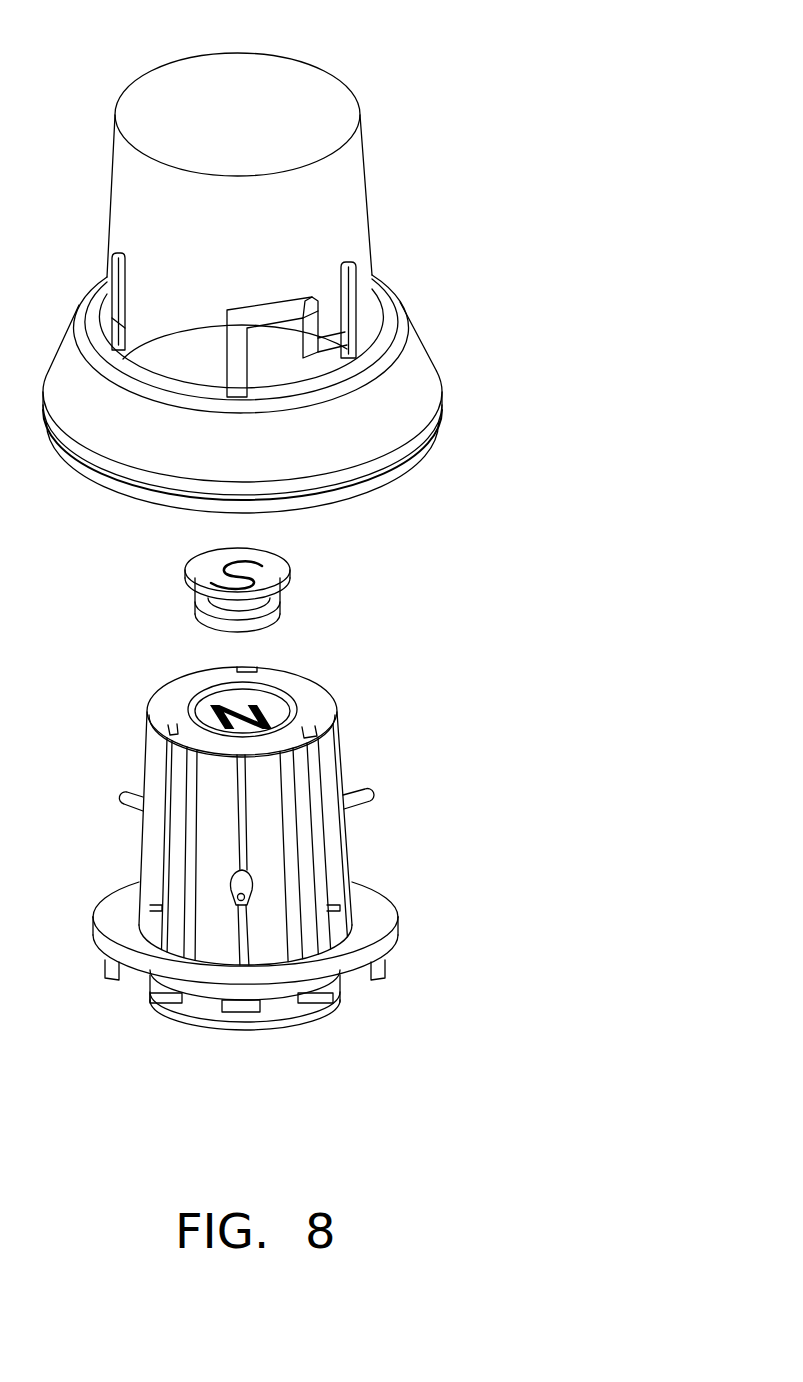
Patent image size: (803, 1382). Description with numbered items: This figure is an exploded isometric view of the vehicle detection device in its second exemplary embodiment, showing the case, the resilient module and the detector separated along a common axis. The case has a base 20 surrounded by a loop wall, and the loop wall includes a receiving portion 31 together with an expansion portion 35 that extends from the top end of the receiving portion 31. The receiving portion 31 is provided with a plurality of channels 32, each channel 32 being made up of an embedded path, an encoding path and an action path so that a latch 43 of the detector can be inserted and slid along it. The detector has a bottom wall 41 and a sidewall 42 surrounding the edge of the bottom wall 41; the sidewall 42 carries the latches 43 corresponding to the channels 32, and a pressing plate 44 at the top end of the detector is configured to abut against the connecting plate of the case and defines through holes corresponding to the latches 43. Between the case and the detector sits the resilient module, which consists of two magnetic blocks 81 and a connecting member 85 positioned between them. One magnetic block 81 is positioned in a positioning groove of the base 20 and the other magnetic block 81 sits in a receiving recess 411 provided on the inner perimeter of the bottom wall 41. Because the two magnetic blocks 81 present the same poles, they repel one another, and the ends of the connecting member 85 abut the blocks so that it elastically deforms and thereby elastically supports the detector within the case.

The base 20 is at (307, 93).
The receiving portion 31 is at (332, 203).
The channel 32 is at (317, 342).
The expansion portion 35 is at (387, 415).
The magnetic block 81 is at (272, 568).
The connecting member 85 is at (278, 617).
The bottom wall 41 is at (310, 713).
The receiving recess 411 is at (270, 708).
The sidewall 42 is at (307, 860).
The latch 43 is at (357, 798).
The pressing plate 44 is at (367, 912).